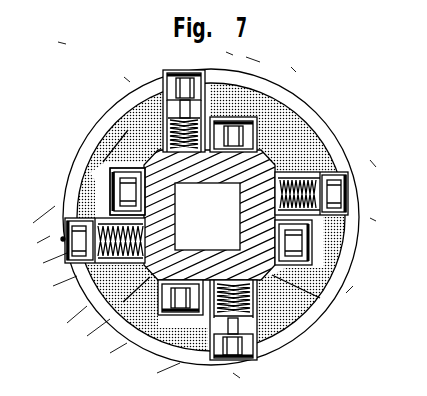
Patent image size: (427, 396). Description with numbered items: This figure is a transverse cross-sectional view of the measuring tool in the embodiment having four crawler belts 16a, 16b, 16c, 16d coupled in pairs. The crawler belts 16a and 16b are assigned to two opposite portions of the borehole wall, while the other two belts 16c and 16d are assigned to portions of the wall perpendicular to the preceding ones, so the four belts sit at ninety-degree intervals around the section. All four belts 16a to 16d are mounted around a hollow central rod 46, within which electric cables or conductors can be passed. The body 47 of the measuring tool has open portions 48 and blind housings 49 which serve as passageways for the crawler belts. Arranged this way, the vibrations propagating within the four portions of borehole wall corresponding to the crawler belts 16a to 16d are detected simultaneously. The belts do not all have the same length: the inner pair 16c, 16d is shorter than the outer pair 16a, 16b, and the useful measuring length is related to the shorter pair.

The crawler belt 16a is at (300, 245).
The crawler belt 16b is at (345, 185).
The crawler belt 16c is at (238, 117).
The crawler belt 16d is at (170, 72).
The hollow central rod 46 is at (306, 147).
The body 47 is at (312, 162).
The open portions 48 is at (88, 265).
The blind housings 49 is at (110, 200).